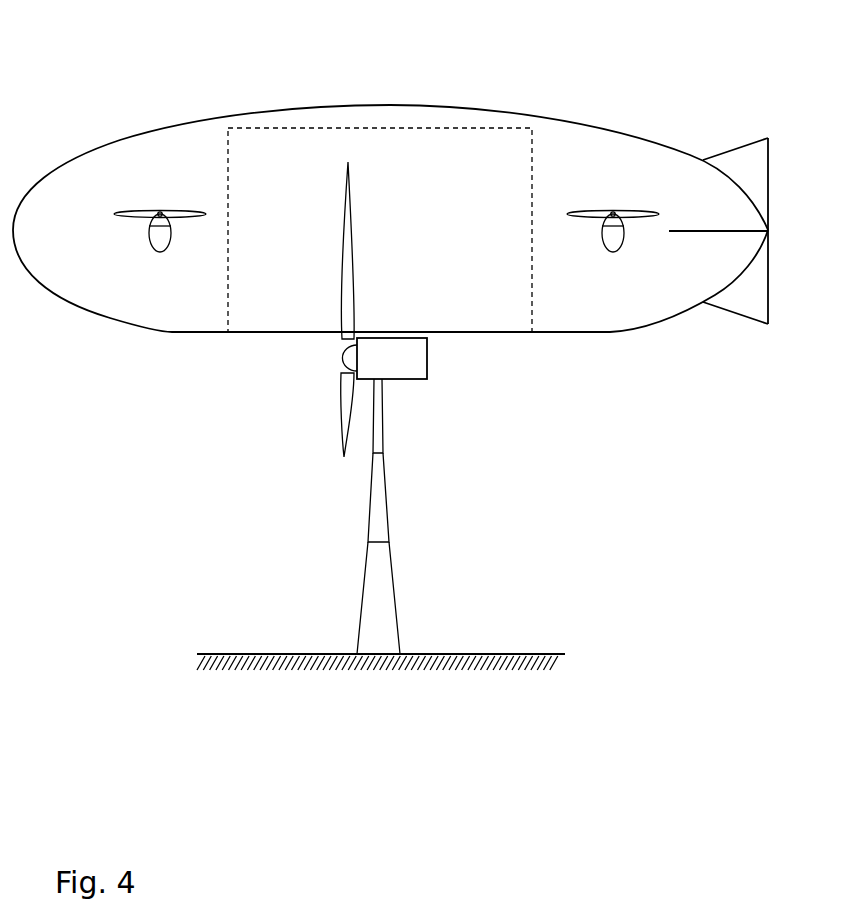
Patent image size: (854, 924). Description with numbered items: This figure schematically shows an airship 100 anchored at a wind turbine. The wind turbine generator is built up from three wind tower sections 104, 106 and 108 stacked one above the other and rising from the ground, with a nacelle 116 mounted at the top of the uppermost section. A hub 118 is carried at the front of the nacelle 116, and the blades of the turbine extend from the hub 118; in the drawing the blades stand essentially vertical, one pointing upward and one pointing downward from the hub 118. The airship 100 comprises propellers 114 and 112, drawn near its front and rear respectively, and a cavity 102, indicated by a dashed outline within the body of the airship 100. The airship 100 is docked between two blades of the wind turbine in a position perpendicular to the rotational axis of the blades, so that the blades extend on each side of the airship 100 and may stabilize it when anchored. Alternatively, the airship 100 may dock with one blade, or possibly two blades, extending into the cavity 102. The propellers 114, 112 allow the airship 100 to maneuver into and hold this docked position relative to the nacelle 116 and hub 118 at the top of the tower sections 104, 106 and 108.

The airship 100 is at (132, 160).
The cavity 102 is at (506, 246).
The wind tower section 104 is at (381, 598).
The wind tower section 106 is at (378, 509).
The wind tower section 108 is at (398, 444).
The propeller 112 is at (635, 212).
The propeller 114 is at (184, 210).
The nacelle 116 is at (397, 358).
The hub 118 is at (345, 355).